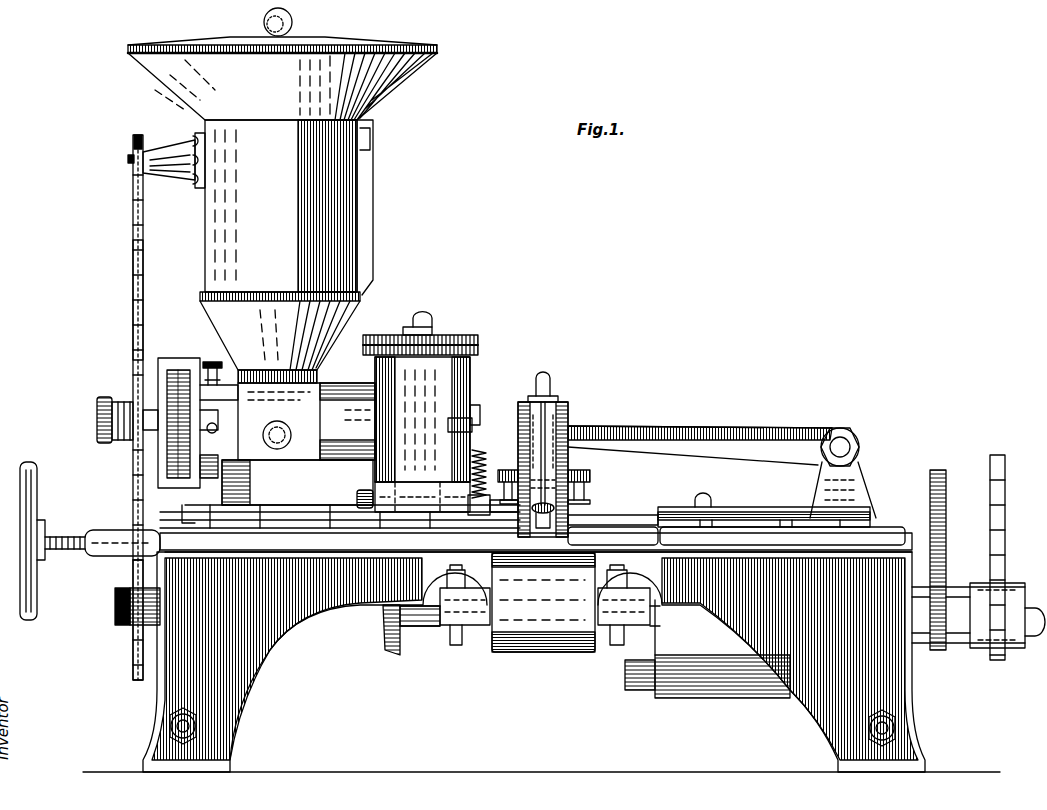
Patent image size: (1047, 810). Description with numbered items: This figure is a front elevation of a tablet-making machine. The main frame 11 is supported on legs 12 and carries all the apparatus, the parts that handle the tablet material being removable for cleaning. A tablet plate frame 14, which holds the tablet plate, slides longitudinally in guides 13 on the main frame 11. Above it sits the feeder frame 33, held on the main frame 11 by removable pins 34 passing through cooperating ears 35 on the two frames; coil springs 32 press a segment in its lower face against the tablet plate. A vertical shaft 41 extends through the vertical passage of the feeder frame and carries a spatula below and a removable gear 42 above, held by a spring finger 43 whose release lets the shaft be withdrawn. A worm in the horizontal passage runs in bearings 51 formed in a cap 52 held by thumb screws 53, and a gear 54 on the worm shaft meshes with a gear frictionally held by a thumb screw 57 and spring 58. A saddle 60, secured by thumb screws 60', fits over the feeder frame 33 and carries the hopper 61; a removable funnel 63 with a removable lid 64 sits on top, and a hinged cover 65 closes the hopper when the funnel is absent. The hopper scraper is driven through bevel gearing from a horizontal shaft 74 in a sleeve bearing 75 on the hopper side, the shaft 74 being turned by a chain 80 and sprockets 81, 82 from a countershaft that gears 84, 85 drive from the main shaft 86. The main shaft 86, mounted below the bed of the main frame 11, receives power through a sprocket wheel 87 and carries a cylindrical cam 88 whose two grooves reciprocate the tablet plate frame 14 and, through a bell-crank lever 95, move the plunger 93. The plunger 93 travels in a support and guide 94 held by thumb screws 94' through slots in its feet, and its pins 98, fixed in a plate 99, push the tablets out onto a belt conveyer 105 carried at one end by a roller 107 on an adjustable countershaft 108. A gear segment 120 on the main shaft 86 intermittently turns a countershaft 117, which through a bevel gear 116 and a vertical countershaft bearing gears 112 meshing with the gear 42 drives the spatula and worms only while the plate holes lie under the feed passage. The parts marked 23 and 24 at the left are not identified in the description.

The main frame 11 is at (896, 533).
The legs 12 is at (250, 690).
The guides 13 is at (740, 507).
The tablet plate frame 14 is at (640, 513).
The crank handle 23 is at (78, 552).
The hand wheel 24 is at (32, 620).
The coil springs 32 is at (487, 455).
The feeder frame 33 is at (473, 372).
The removable pins 34 is at (358, 492).
The ears 35 is at (432, 481).
The vertical shaft 41 is at (422, 326).
The removable gear 42 is at (445, 335).
The spring finger 43 is at (415, 317).
The bearings 51 is at (158, 452).
The cap 52 is at (210, 479).
The thumb screws 53 is at (210, 361).
The gear 54 is at (178, 367).
The thumb screw 57 is at (105, 395).
The spring 58 is at (127, 440).
The saddle 60 is at (298, 444).
The thumb screws 60' is at (273, 457).
The hopper 61 is at (325, 335).
The removable funnel 63 is at (398, 83).
The removable lid 64 is at (330, 45).
The hinged cover 65 is at (372, 172).
The horizontal shaft 74 is at (128, 160).
The sleeve bearing 75 is at (185, 172).
The chain 80 is at (133, 255).
The sprocket 81 is at (138, 133).
The sprocket 82 is at (133, 675).
The gear 84 is at (937, 468).
The gear 85 is at (948, 585).
The main shaft 86 is at (1030, 606).
The sprocket wheel 87 is at (997, 453).
The cylindrical cam 88 is at (740, 700).
The plunger 93 is at (552, 375).
The support and guide 94 is at (568, 455).
The thumb screws 94' is at (548, 476).
The bell-crank lever 95 is at (680, 425).
The pins 98 is at (585, 505).
The plate 99 is at (588, 500).
The belt conveyer 105 is at (543, 602).
The roller 107 is at (492, 650).
The countershaft 108 is at (650, 612).
The gears 112 is at (480, 347).
The bevel gear 116 is at (390, 656).
The countershaft 117 is at (440, 625).
The gear segment 120 is at (630, 690).